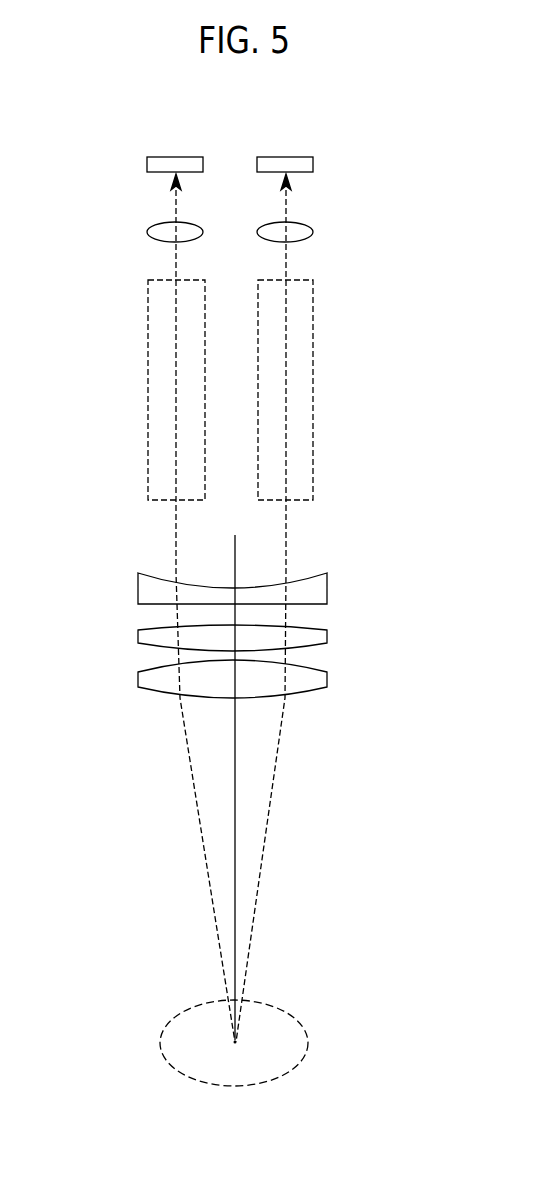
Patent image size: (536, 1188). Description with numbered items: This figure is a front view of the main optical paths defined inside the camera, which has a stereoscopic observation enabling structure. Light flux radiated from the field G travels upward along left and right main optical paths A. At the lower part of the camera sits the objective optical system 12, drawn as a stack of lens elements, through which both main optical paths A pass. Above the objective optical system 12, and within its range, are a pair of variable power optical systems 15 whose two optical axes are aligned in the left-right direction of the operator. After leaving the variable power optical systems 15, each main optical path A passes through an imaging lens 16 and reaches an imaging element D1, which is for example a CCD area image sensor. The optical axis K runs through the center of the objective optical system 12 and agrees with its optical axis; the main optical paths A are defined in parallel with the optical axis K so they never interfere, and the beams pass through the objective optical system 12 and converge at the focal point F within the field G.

The imaging element D1 is at (147, 165).
The imaging lens 16 is at (147, 232).
The variable power optical system 15 is at (148, 392).
The main optical path A is at (176, 550).
The optical axis K is at (235, 770).
The objective optical system 12 is at (108, 583).
The field G is at (186, 1008).
The focal point F is at (236, 1040).